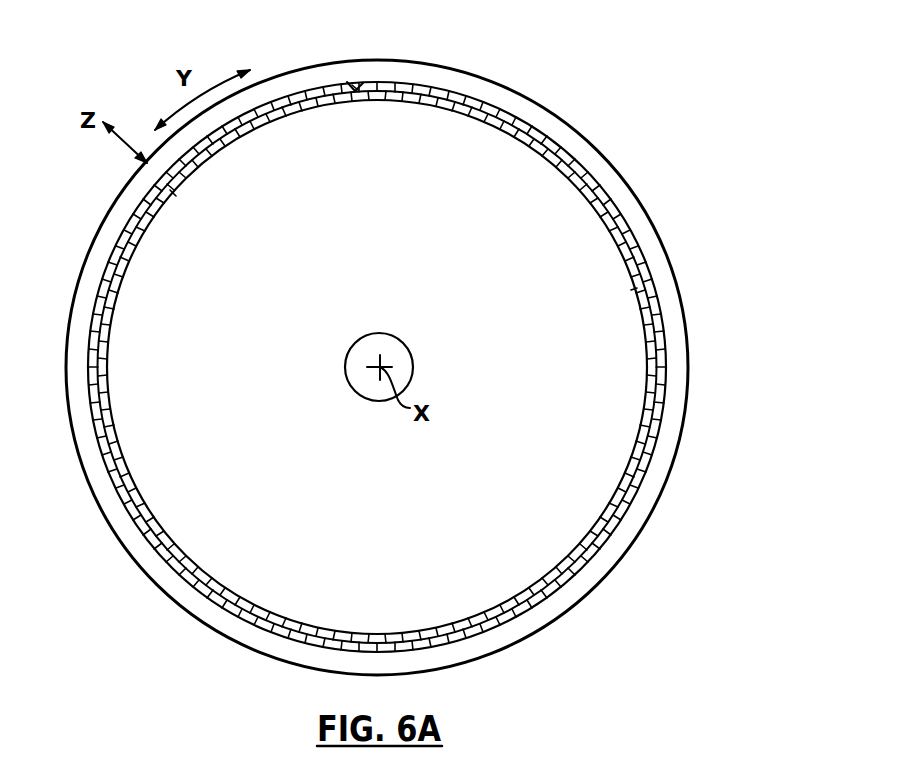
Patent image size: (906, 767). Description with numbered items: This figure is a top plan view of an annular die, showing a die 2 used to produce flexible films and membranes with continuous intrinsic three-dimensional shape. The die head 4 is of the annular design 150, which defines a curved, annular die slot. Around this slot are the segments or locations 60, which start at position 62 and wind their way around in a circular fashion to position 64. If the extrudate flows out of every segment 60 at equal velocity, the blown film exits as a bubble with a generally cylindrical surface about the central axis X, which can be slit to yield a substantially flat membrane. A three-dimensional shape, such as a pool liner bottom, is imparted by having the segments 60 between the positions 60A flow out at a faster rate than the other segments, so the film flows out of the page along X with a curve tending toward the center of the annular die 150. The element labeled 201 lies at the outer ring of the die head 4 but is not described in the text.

The disc 2 is at (582, 114).
The disc substrate 4 is at (630, 204).
The servo pattern segments 60 is at (516, 114).
The servo pattern segment 60A is at (170, 190).
The pattern start point 62 is at (361, 74).
The pattern end point 64 is at (354, 82).
The servo track band 150 is at (667, 380).
The data track region 201 is at (645, 472).